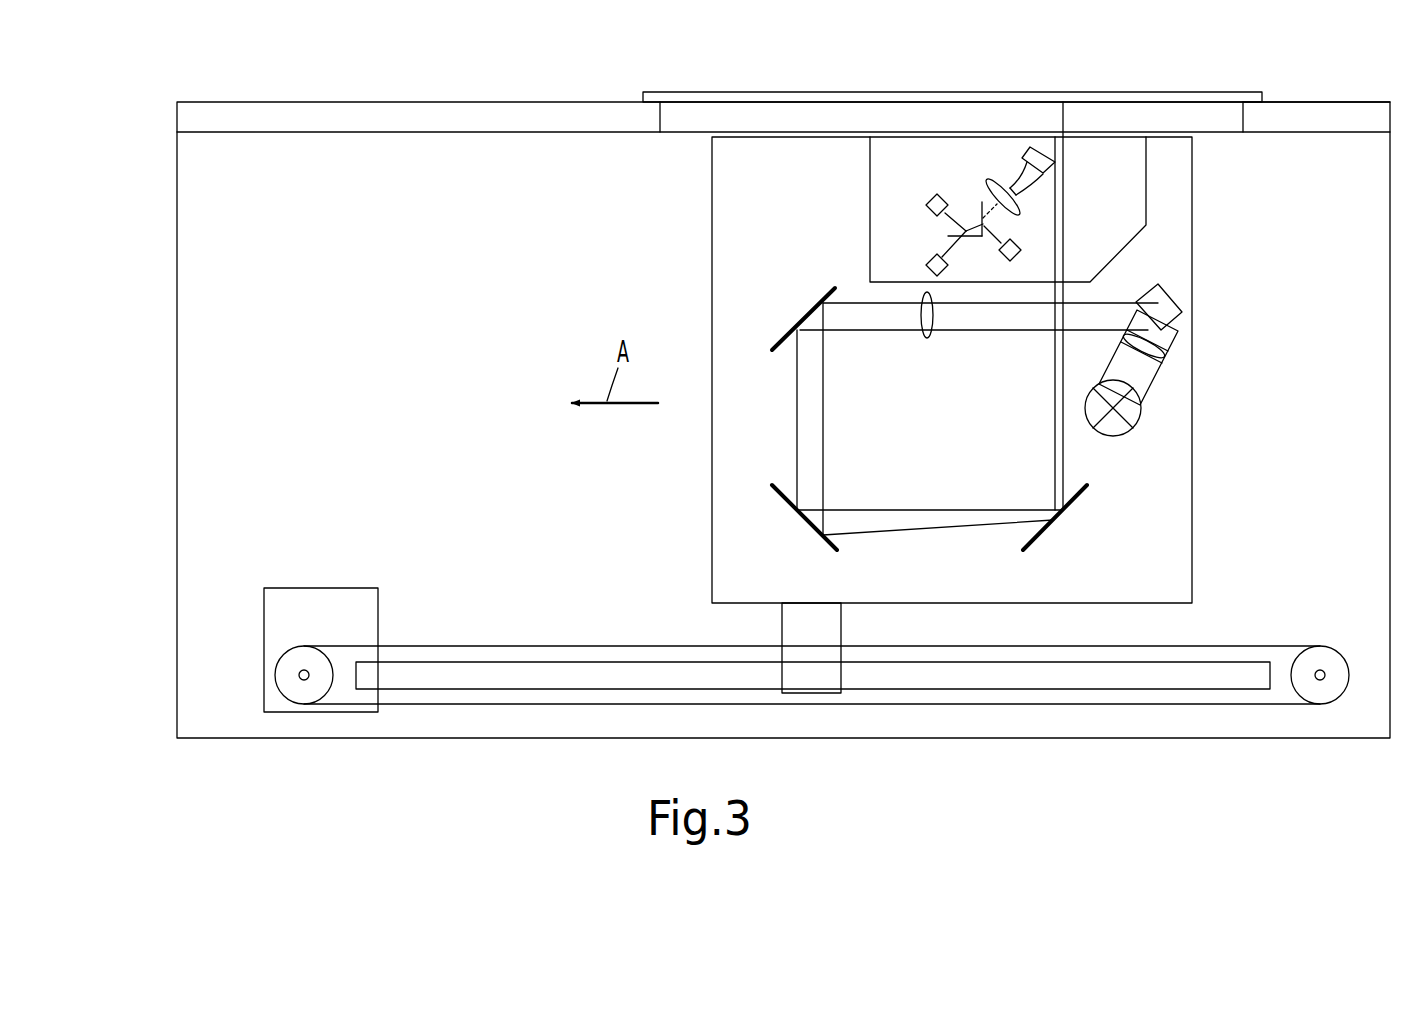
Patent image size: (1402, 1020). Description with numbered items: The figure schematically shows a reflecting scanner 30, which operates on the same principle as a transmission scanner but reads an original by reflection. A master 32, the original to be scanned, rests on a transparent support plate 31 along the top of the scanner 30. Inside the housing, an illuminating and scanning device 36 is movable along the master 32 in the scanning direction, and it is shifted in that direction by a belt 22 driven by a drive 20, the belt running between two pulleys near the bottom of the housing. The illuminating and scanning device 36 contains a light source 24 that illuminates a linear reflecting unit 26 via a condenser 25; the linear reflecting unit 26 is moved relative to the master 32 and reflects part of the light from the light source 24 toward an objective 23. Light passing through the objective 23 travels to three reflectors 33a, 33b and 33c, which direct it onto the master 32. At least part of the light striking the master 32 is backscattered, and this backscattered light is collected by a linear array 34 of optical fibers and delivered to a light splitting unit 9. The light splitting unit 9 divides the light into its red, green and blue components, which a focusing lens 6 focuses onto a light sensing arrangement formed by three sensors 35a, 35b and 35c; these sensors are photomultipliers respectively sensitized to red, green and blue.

The reflecting scanner 30 is at (162, 347).
The transparent support plate 31 is at (1222, 110).
The master 32 is at (1142, 92).
The illuminating and scanning device 36 is at (678, 219).
The light splitting unit 9 is at (956, 191).
The focusing lens 6 is at (998, 182).
The linear array of optical fibers 34 is at (1028, 142).
The sensor 35a is at (928, 203).
The sensor 35b is at (929, 262).
The sensor 35c is at (1021, 243).
The reflector 33a is at (815, 312).
The reflector 33b is at (802, 518).
The reflector 33c is at (1045, 530).
The objective 23 is at (930, 337).
The light source 24 is at (1118, 436).
The condenser 25 is at (1152, 363).
The linear reflecting unit 26 is at (1168, 296).
The belt 22 is at (458, 645).
The drive 20 is at (313, 592).